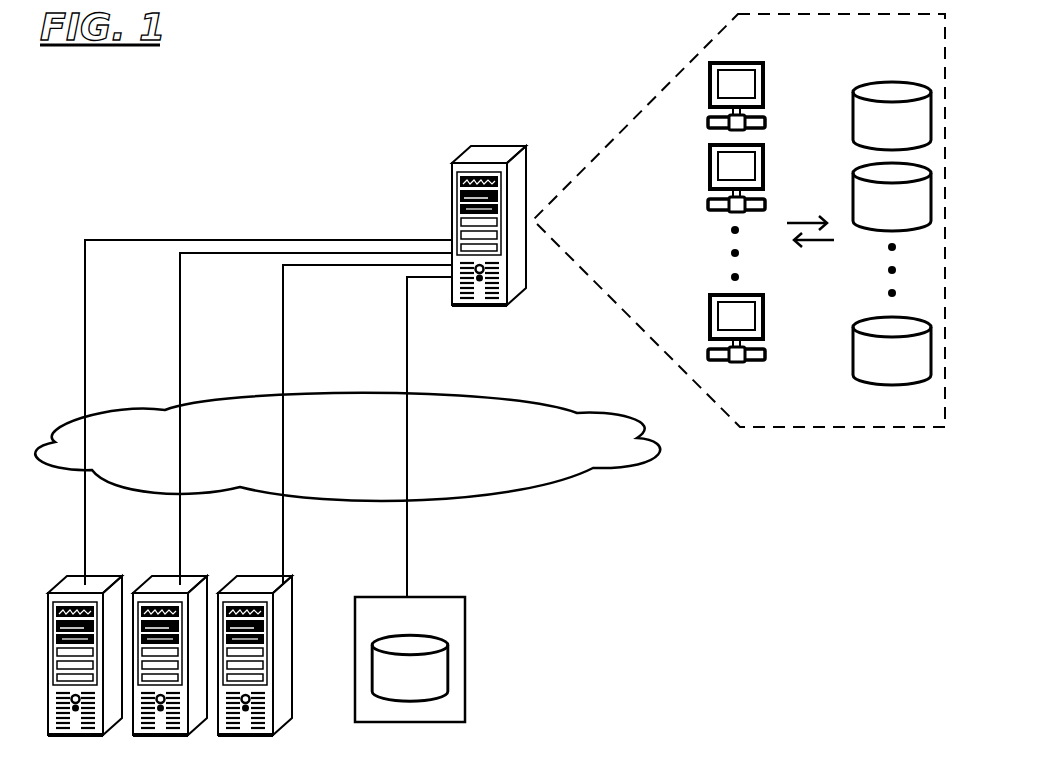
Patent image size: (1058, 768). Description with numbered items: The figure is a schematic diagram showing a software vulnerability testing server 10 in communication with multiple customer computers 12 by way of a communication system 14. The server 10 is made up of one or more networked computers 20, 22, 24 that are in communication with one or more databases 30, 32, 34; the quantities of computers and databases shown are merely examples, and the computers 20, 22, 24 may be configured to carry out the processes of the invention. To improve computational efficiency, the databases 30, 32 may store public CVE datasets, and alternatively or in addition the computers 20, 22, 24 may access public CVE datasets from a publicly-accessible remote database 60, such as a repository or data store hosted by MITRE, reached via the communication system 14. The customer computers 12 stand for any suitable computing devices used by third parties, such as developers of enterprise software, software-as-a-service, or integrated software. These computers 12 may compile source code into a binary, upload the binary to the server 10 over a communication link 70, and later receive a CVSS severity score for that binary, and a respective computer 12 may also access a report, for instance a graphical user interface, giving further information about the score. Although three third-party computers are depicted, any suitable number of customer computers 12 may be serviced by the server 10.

The software vulnerability testing server 10 is at (422, 176).
The customer computers 12 is at (305, 583).
The communication system 14 is at (262, 456).
The networked computer 20 is at (692, 107).
The networked computer 22 is at (690, 167).
The networked computer 24 is at (687, 293).
The database 30 is at (905, 132).
The database 32 is at (905, 213).
The database 34 is at (905, 368).
The remote database 60 is at (423, 634).
The communication link 70 is at (283, 550).